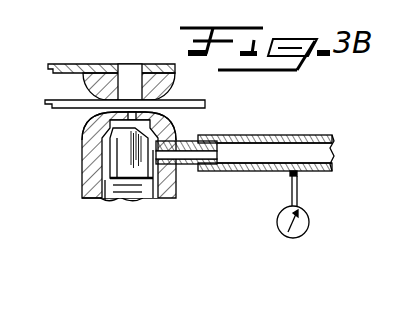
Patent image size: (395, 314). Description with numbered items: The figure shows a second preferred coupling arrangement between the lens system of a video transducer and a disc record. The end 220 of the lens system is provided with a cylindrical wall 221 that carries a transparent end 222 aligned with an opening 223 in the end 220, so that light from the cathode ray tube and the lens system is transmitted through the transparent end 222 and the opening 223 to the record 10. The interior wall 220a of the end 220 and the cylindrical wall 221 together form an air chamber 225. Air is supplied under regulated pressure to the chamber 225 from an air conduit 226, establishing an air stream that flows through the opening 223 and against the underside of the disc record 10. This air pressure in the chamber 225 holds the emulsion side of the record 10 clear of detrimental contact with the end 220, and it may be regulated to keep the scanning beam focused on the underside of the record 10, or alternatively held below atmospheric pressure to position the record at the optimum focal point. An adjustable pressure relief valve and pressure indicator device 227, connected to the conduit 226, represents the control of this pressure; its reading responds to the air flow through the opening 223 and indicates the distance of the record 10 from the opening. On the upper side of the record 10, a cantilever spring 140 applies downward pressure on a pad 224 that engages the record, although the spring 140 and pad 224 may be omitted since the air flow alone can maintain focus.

The cantilever spring 140 is at (70, 65).
The pad 224 is at (88, 87).
The record 10 is at (197, 101).
The end of the lens system 220 is at (82, 160).
The opening 223 is at (104, 122).
The cylindrical wall 221 is at (153, 200).
The air chamber 225 is at (102, 200).
The interior wall 220a is at (85, 190).
The transparent end 222 is at (157, 116).
The air conduit 226 is at (301, 147).
The adjustable pressure relief valve and pressure indicator device 227 is at (277, 214).